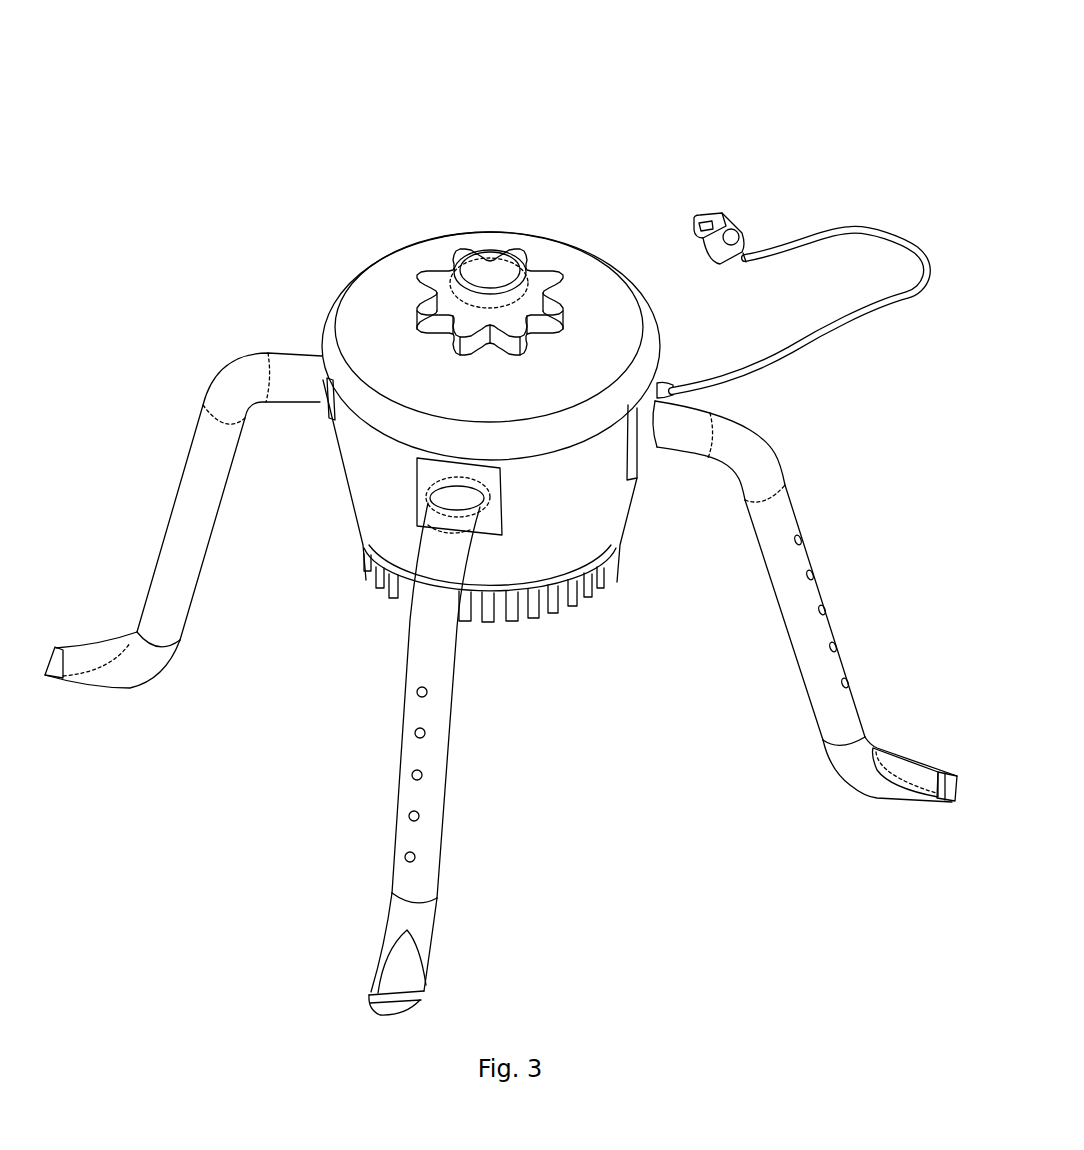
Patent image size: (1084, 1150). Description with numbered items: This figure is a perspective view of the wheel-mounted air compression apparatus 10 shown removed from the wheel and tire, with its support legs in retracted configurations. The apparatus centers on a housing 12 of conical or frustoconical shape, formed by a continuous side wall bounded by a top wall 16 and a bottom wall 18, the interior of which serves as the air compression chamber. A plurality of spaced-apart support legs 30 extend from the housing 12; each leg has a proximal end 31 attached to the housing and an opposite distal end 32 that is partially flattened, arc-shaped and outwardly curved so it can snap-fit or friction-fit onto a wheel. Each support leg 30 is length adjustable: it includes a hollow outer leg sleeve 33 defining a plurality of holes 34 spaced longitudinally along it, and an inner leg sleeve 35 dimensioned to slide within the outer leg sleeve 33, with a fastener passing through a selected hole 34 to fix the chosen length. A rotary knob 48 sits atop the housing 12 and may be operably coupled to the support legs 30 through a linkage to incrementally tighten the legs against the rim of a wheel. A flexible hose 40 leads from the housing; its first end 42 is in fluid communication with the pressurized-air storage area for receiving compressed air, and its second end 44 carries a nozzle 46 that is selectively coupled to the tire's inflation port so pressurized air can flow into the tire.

The wheel-mounted air compression apparatus 10 is at (333, 93).
The housing 12 is at (318, 523).
The top wall 16 is at (590, 280).
The bottom wall 18 is at (617, 575).
The support legs 30 is at (133, 544).
The proximal end 31 is at (678, 438).
The distal end 32 is at (893, 800).
The outer leg sleeve 33 is at (810, 648).
The holes 34 is at (828, 610).
The inner leg sleeve 35 is at (852, 770).
The flexible hose 40 is at (892, 236).
The first end 42 is at (752, 264).
The second end 44 is at (700, 378).
The nozzle 46 is at (727, 222).
The rotary knob 48 is at (488, 268).